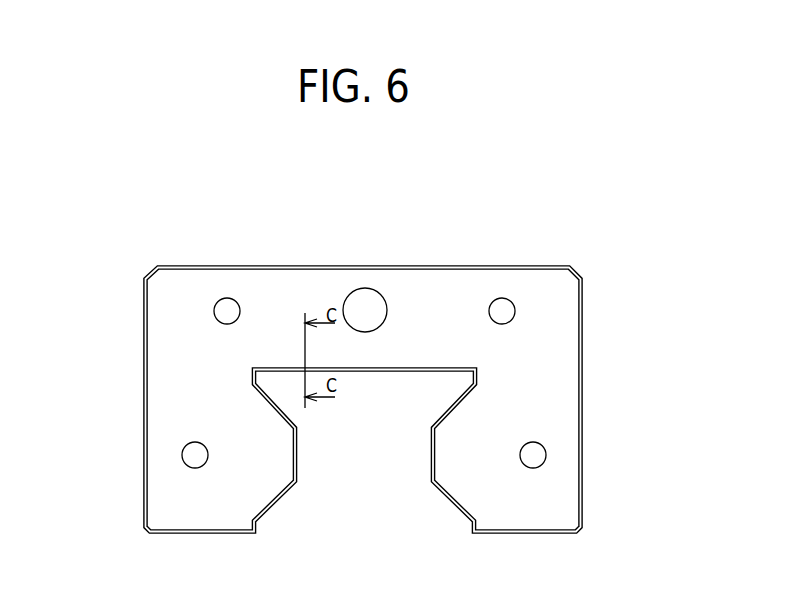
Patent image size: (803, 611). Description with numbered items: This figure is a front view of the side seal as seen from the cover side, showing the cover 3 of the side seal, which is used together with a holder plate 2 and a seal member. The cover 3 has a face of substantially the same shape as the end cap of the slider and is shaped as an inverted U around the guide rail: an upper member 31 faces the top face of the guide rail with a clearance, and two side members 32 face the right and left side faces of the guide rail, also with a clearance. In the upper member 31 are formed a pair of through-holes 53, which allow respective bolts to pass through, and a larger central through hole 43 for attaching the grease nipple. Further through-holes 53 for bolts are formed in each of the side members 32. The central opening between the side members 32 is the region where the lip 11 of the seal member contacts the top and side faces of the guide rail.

The holder plate 2 is at (400, 371).
The cover 3 is at (400, 371).
The upper member 31 is at (433, 302).
The side members 32 is at (177, 393).
The through hole 43 is at (379, 294).
The through-holes 53 is at (229, 302).
The lip 11 is at (297, 458).